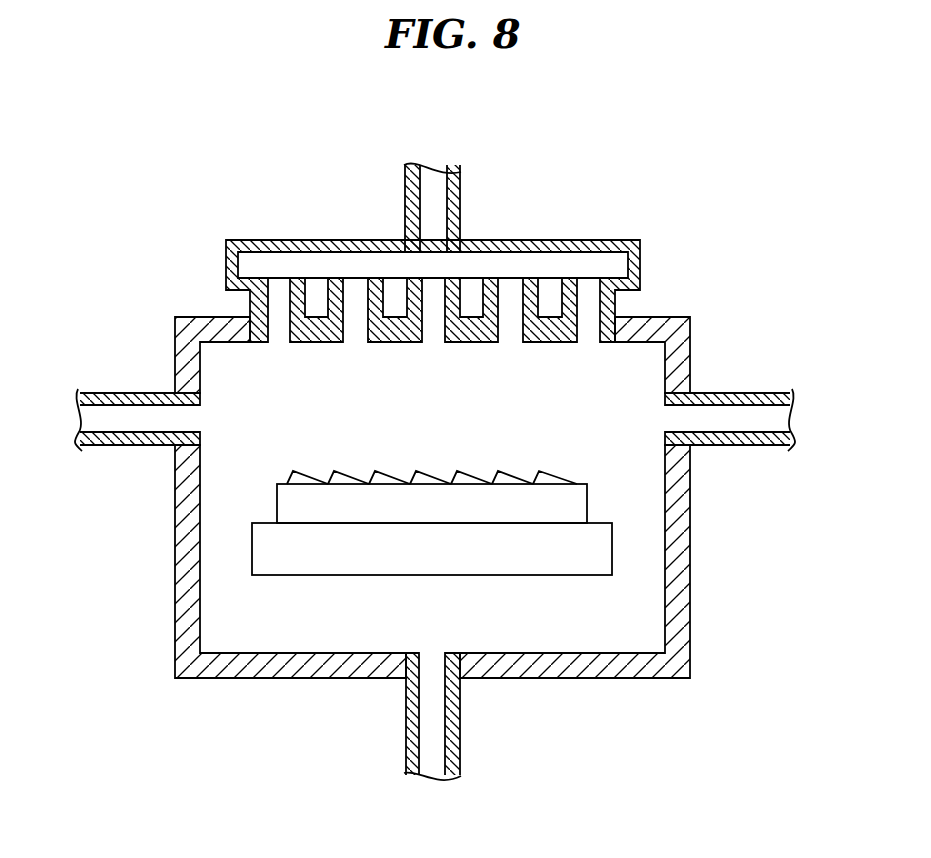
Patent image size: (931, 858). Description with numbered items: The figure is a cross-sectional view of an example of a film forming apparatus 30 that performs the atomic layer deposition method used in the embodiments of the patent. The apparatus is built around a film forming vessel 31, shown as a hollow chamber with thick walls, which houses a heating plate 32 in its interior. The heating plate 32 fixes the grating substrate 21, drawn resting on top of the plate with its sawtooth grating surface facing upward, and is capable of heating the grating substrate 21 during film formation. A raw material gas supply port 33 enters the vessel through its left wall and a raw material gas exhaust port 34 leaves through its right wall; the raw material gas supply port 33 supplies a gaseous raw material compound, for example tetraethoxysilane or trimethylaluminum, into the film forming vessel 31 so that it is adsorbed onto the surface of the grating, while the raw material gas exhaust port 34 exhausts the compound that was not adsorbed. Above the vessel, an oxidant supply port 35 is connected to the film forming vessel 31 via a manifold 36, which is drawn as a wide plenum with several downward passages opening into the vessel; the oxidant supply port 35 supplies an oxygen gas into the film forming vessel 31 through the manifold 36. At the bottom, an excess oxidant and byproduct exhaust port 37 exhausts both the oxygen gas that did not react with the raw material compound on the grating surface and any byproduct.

The film forming apparatus 30 is at (446, 111).
The film forming vessel 31 is at (652, 632).
The heating plate 32 is at (570, 568).
The raw material gas supply port 33 is at (118, 446).
The raw material gas exhaust port 34 is at (747, 446).
The oxidant supply port 35 is at (462, 197).
The manifold 36 is at (641, 271).
The excess oxidant and byproduct exhaust port 37 is at (461, 748).
The grating substrate 21 is at (565, 492).